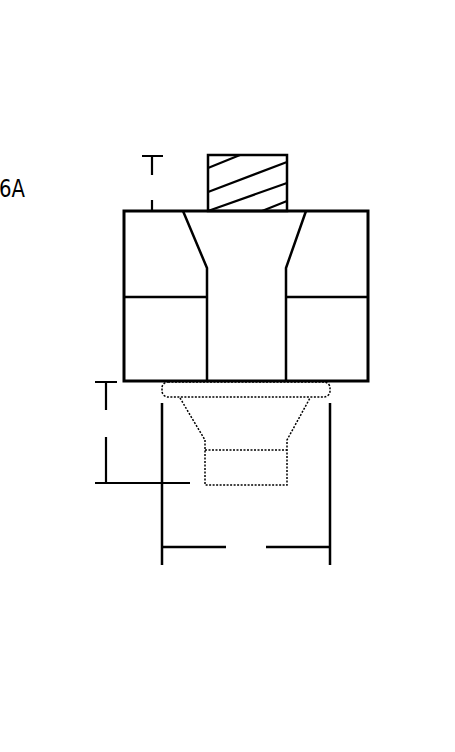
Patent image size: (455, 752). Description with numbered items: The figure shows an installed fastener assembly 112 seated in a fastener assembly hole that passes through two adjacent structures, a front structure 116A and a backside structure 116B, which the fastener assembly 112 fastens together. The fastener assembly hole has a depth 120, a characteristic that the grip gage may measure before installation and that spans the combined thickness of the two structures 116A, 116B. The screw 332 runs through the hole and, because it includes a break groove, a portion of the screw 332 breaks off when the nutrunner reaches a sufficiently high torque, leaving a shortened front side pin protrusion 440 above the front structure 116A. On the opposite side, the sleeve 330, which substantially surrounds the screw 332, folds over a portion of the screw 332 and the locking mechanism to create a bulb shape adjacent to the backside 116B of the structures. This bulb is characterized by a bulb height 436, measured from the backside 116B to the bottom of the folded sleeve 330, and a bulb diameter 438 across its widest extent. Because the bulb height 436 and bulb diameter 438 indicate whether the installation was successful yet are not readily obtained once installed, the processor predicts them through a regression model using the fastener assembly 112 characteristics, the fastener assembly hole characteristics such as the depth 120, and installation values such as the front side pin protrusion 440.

The fastener assembly 112 is at (265, 106).
The structure 116A is at (340, 207).
The backside of the structure 116B is at (347, 387).
The depth 120 is at (380, 212).
The screw 332 is at (246, 152).
The sleeve 330 is at (186, 443).
The front side pin protrusion 440 is at (152, 183).
The bulb height 436 is at (138, 432).
The bulb diameter 438 is at (246, 484).